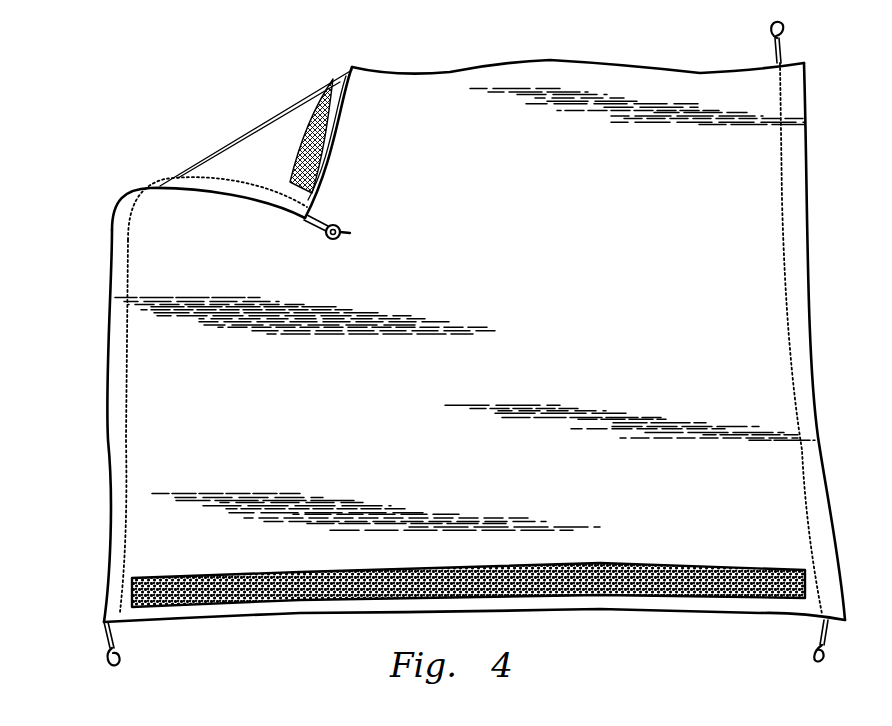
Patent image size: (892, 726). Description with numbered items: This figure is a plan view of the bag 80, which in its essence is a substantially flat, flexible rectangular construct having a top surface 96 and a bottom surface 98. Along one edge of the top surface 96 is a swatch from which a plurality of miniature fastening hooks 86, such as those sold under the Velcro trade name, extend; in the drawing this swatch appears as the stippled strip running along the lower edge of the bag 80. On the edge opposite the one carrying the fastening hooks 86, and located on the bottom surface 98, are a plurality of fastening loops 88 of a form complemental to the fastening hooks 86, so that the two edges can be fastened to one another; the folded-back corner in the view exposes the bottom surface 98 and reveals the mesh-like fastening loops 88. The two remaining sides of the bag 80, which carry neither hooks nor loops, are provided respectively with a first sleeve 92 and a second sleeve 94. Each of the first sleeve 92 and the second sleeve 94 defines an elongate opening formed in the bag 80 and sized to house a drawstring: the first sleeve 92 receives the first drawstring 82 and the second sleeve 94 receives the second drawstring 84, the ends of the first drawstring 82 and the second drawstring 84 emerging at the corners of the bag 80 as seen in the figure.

The bag 80 is at (455, 365).
The first drawstring 82 is at (782, 53).
The second drawstring 84 is at (323, 232).
The fastening hooks 86 is at (541, 592).
The fastening loops 88 is at (323, 137).
The first sleeve 92 is at (822, 450).
The second sleeve 94 is at (108, 487).
The top surface 96 is at (553, 391).
The bottom surface 98 is at (247, 168).